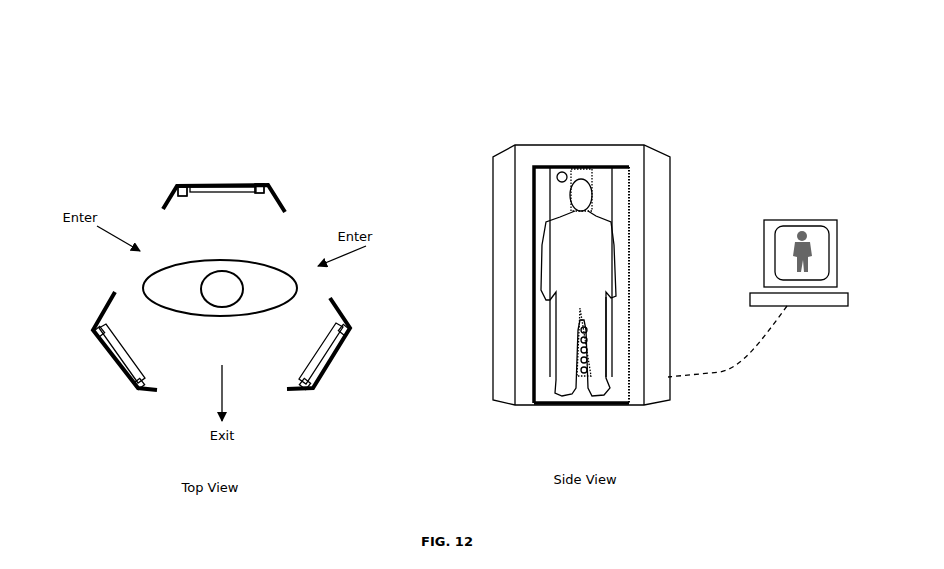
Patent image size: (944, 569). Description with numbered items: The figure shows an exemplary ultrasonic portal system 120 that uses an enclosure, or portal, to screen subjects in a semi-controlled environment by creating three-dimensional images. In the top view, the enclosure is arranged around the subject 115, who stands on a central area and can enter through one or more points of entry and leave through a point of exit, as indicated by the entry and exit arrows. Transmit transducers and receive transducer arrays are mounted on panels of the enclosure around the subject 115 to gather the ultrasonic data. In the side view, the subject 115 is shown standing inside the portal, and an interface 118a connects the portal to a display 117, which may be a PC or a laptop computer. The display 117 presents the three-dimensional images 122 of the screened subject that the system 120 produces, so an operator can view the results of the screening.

The subject 115 is at (262, 283).
The display 117 is at (772, 222).
The interface 118a is at (727, 342).
The system 120 is at (733, 90).
The 3D images 122 is at (804, 236).